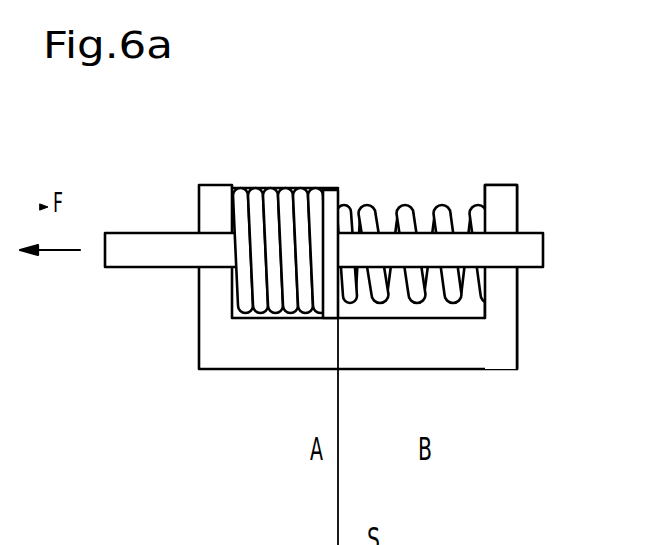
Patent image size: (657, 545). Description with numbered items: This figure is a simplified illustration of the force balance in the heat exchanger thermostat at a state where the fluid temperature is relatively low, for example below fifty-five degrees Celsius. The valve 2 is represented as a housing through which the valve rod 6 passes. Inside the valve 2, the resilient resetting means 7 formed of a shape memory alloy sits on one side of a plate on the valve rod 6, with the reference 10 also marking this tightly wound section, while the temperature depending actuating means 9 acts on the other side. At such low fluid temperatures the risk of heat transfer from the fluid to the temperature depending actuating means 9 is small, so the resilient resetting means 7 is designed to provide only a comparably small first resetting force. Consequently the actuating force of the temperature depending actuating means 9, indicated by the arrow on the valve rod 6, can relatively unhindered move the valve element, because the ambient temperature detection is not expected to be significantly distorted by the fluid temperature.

The valve 2 is at (503, 338).
The valve rod 6 is at (148, 253).
The resilient resetting means 7 is at (285, 213).
The spring portion with closed windings 10 is at (288, 208).
The temperature depending actuating means 9 is at (440, 218).